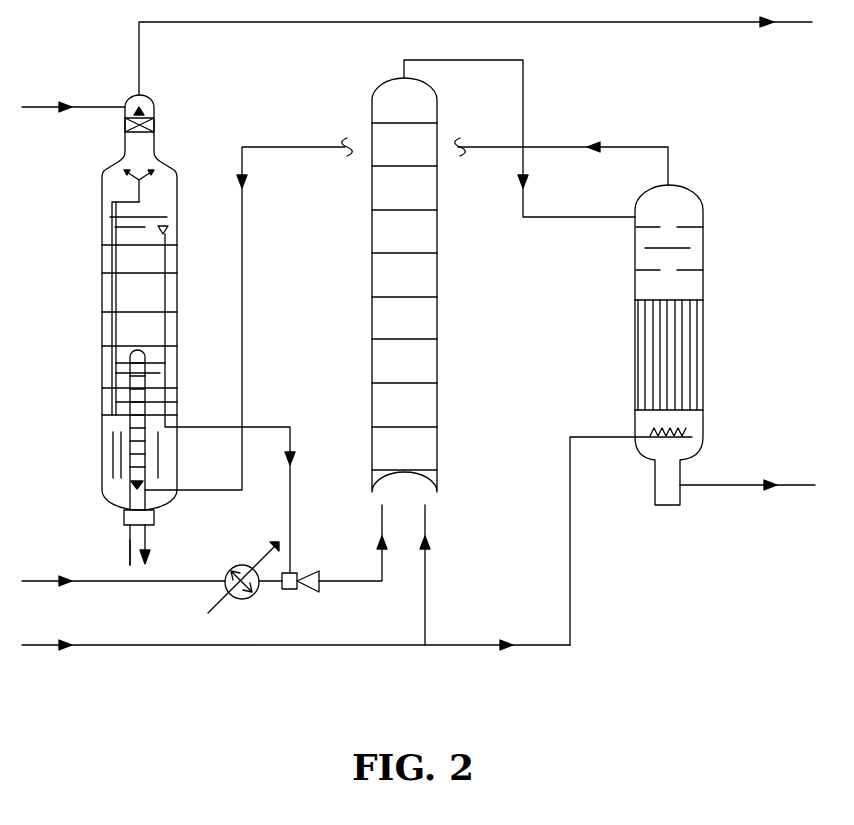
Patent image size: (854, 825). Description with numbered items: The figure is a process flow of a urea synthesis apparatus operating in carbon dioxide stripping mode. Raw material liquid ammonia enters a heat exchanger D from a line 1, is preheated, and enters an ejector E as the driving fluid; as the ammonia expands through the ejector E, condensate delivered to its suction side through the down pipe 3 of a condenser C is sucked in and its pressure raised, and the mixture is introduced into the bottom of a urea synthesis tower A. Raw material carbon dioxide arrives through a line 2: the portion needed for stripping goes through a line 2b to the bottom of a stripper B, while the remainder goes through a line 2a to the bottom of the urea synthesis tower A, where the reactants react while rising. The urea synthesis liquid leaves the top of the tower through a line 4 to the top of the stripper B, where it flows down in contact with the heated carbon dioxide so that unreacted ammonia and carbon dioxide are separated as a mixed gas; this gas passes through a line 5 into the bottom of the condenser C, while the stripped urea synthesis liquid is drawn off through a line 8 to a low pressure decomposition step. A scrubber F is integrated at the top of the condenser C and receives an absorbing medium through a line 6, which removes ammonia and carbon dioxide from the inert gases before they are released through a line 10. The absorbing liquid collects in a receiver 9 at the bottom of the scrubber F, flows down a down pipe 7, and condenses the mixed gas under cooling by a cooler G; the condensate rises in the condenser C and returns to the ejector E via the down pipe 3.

The line 1 is at (38, 584).
The line 2 is at (38, 648).
The line 2a is at (426, 600).
The line 2b is at (572, 524).
The down pipe 3 is at (166, 351).
The line 4 is at (524, 87).
The line 5 is at (572, 150).
The line 6 is at (37, 110).
The down pipe 7 is at (115, 260).
The line 8 is at (743, 488).
The receiver 9 is at (120, 179).
The line 10 is at (330, 24).
The urea synthesis tower A is at (440, 300).
The stripper B is at (705, 283).
The condenser C is at (179, 296).
The heat exchanger D is at (238, 599).
The ejector E is at (289, 589).
The scrubber F is at (156, 125).
The cooler G is at (170, 540).